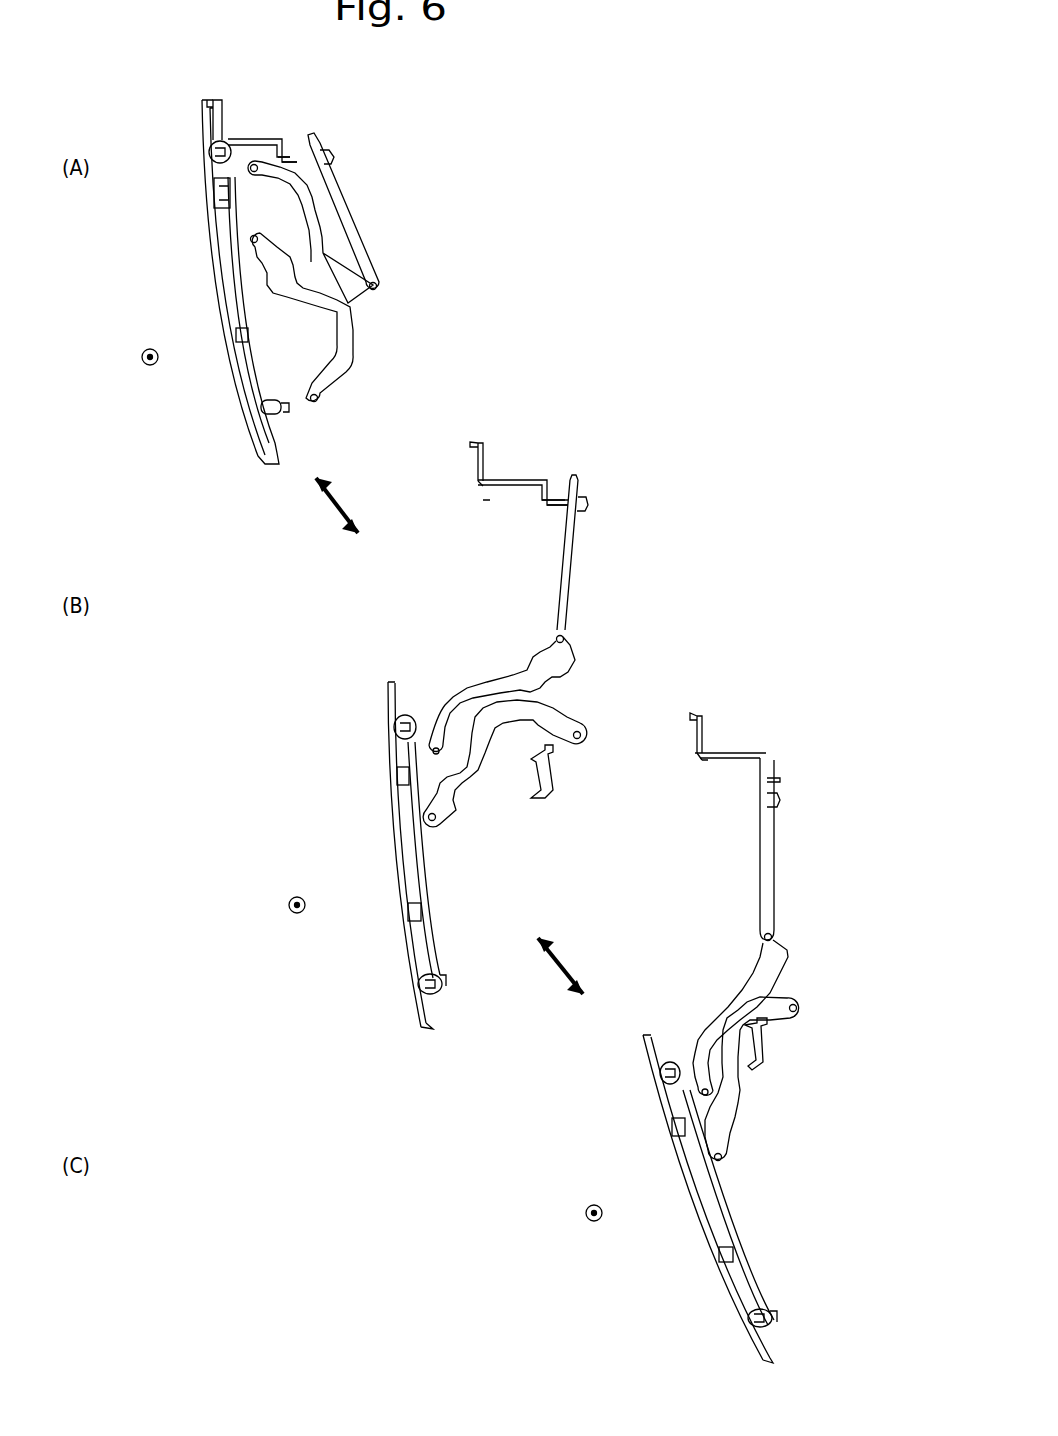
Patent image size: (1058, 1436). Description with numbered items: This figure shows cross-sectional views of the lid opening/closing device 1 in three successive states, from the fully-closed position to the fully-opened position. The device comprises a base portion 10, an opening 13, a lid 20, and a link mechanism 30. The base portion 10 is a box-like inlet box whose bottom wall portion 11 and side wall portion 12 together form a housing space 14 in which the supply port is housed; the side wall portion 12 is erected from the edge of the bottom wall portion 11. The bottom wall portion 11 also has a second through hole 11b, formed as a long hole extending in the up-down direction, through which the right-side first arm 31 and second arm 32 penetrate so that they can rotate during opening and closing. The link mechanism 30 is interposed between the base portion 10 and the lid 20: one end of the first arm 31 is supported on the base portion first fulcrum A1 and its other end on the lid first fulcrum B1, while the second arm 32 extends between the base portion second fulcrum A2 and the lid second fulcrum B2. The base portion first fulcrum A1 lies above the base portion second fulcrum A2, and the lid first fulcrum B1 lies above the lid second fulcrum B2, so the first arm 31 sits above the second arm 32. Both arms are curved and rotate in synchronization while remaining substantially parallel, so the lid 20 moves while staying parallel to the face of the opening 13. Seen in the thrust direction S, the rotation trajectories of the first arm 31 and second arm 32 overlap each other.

The lid opening/closing device 1 is at (513, 574).
The base portion 10 is at (207, 110).
The bottom wall portion 11 is at (253, 155).
The second through hole 11b is at (298, 162).
The side wall portion 12 is at (253, 140).
The opening 13 is at (279, 405).
The housing space 14 is at (535, 560).
The lid 20 is at (223, 272).
The link mechanism 30 is at (560, 660).
The first arm 31 is at (340, 263).
The second arm 32 is at (350, 347).
The base portion first fulcrum A1 is at (377, 288).
The base portion second fulcrum A2 is at (320, 398).
The lid first fulcrum B1 is at (256, 174).
The lid second fulcrum B2 is at (258, 247).
The thrust direction S is at (383, 779).